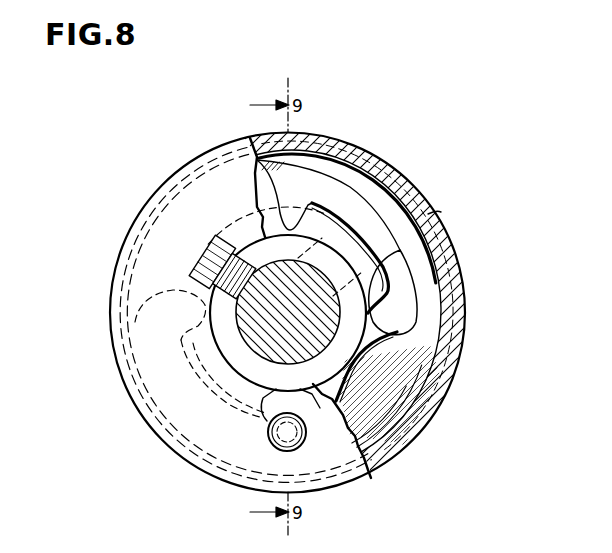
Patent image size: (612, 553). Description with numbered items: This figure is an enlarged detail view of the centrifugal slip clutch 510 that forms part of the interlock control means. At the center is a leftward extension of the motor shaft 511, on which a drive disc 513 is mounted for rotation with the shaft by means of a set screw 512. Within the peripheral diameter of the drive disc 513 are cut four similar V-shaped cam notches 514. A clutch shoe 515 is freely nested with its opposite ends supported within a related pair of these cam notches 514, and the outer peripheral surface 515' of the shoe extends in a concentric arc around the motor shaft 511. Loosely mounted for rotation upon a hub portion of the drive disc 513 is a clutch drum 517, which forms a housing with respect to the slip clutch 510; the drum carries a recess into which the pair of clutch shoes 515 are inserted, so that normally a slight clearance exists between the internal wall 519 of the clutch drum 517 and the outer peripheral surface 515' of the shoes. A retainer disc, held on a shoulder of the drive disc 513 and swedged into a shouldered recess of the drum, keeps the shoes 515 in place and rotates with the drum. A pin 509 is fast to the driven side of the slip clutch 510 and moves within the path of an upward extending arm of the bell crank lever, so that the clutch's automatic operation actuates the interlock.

The pin 509 is at (270, 437).
The centrifugal slip clutch 510 is at (437, 428).
The motor shaft 511 is at (255, 331).
The set screw 512 is at (204, 266).
The drive disc 513 is at (360, 367).
The V-shaped cam notch 514 is at (440, 212).
The clutch shoe 515 is at (441, 292).
The outer peripheral surface 515' is at (358, 210).
The clutch drum 517 is at (213, 193).
The internal wall 519 is at (438, 347).